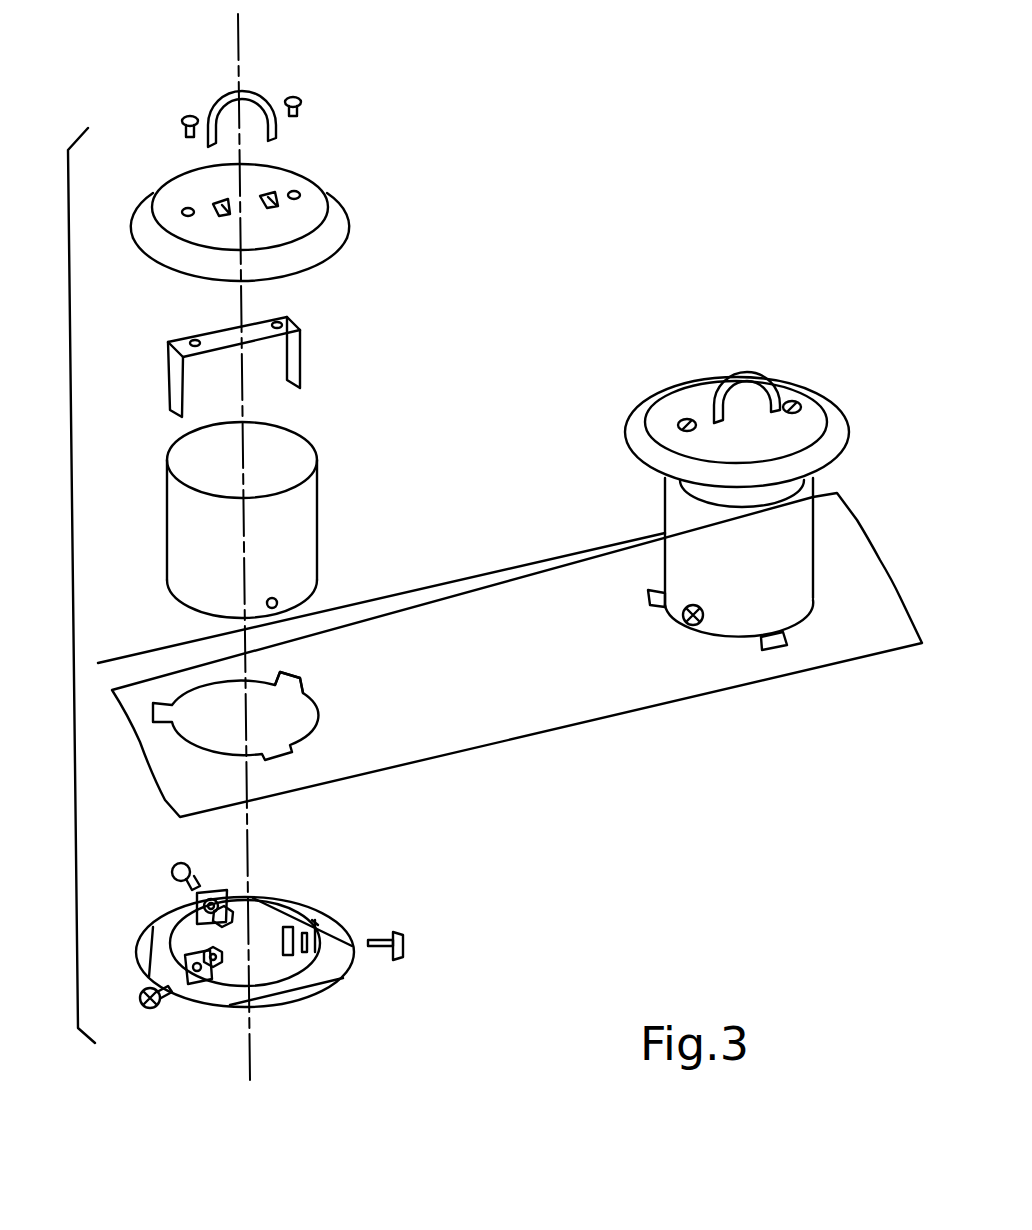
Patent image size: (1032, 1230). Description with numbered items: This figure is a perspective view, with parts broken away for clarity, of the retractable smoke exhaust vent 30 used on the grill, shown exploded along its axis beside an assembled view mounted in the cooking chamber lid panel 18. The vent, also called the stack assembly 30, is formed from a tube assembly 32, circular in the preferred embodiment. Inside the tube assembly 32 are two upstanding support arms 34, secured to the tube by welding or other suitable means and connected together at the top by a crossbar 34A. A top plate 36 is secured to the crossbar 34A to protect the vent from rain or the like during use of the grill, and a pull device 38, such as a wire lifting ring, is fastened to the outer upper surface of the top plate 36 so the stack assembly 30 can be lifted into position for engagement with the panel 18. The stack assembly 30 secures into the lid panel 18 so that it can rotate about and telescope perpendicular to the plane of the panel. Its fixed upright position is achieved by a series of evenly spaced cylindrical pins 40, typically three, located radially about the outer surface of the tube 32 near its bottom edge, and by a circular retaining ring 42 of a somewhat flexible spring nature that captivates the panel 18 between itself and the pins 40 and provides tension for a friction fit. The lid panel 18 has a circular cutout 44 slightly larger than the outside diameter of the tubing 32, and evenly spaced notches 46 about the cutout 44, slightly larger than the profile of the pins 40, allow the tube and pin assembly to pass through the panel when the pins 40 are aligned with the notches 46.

The retractable smoke exhaust vent 30 is at (470, 290).
The cooking chamber lid panel 18 is at (503, 718).
The tube assembly 32 is at (307, 513).
The upstanding support arms 34 is at (295, 355).
The crossbar 34A is at (260, 327).
The top plate 36 is at (317, 197).
The pull device 38 is at (253, 90).
The cylindrical pins 40 is at (398, 940).
The circular retaining ring 42 is at (293, 902).
The circular cutout 44 is at (317, 715).
The notches 46 is at (290, 678).